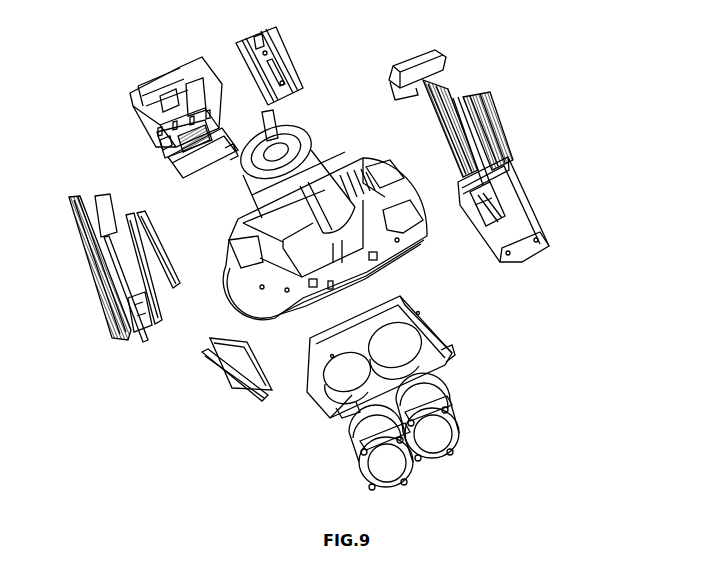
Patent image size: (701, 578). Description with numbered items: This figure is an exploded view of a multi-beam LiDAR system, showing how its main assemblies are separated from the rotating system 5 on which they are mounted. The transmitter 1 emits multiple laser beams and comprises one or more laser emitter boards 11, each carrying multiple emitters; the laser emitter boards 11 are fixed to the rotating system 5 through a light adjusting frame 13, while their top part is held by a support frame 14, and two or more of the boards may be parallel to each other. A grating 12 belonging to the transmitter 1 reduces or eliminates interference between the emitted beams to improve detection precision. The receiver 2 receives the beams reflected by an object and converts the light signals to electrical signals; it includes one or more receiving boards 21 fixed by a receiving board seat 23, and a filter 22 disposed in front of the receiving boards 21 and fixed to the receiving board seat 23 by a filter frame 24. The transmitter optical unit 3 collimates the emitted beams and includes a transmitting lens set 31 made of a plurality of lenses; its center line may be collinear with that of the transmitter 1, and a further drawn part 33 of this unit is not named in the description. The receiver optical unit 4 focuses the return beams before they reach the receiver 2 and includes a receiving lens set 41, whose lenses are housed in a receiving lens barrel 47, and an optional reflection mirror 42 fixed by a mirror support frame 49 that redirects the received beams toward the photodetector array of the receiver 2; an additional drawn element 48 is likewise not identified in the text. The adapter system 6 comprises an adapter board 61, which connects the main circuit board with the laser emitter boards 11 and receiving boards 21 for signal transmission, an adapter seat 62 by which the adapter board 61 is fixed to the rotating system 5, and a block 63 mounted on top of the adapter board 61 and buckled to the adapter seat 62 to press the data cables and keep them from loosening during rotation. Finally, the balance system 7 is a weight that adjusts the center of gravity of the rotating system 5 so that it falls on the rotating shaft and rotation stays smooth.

The transmitter 1 is at (479, 136).
The laser emitter board 11 is at (455, 107).
The grating 12 is at (505, 225).
The light adjusting frame 13 is at (490, 97).
The support frame 14 is at (437, 62).
The receiver 2 is at (119, 311).
The receiving board 21 is at (115, 312).
The filter 22 is at (174, 288).
The receiving board seat 23 is at (150, 312).
The filter frame 24 is at (153, 322).
The transmitter optical unit 3 is at (458, 419).
The transmitting lens set 31 is at (452, 427).
The motor housing 33 is at (447, 388).
The receiver optical unit 4 is at (343, 387).
The receiving lens set 41 is at (372, 467).
The reflection mirror 42 is at (253, 375).
The receiving lens barrel 47 is at (353, 443).
The motor mounting plate 48 is at (417, 313).
The mirror support frame 49 is at (247, 398).
The rotating system 5 is at (332, 178).
The adapter system 6 is at (146, 117).
The adapter board 61 is at (157, 133).
The adapter seat 62 is at (170, 158).
The block 63 is at (158, 128).
The balance system 7 is at (290, 50).